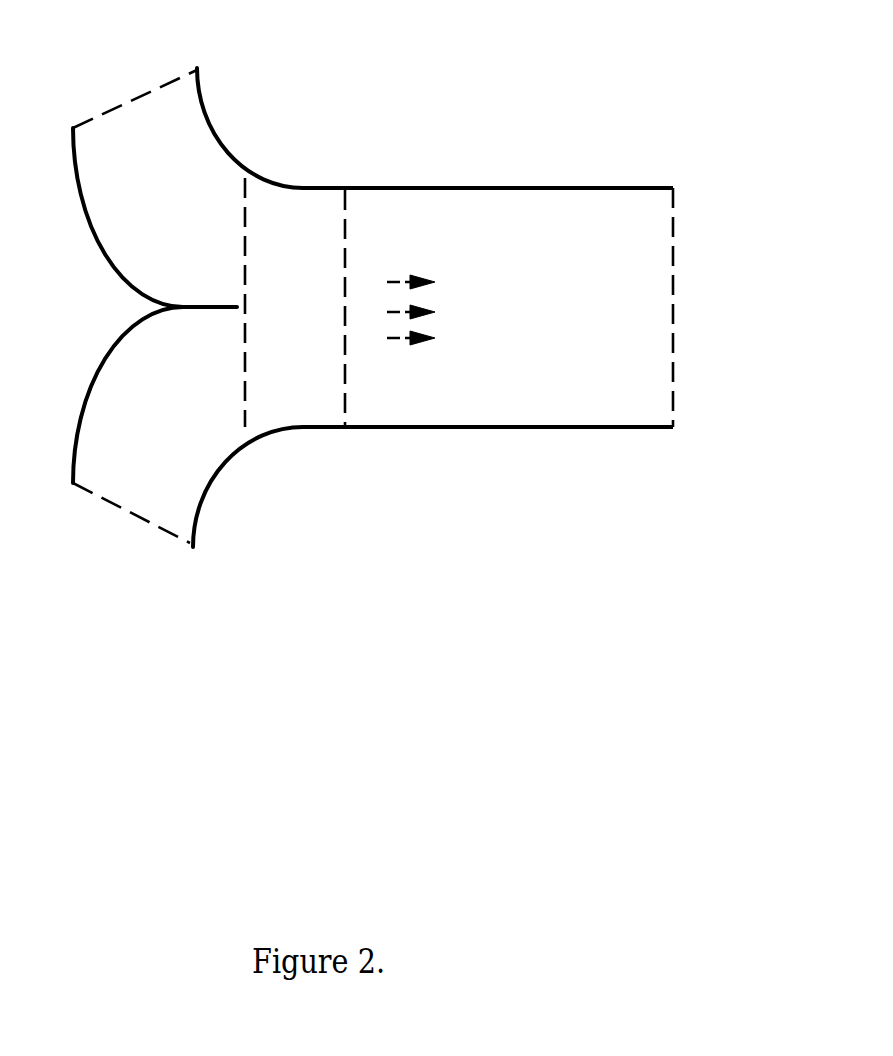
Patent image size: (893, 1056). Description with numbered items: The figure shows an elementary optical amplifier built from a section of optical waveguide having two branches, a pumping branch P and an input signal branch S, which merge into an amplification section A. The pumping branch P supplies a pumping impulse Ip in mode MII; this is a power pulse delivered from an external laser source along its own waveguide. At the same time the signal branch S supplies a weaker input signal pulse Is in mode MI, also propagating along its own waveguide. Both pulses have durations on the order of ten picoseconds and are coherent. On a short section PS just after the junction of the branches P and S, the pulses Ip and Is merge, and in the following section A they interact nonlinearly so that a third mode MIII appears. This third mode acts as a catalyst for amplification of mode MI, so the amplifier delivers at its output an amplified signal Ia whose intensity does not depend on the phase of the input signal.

The pumping branch P is at (209, 187).
The input signal branch S is at (209, 427).
The short section PS is at (295, 302).
The amplification section A is at (509, 278).
The pumping impulse Ip is at (110, 92).
The input signal pulse Is is at (112, 522).
The amplified signal Ia is at (683, 314).